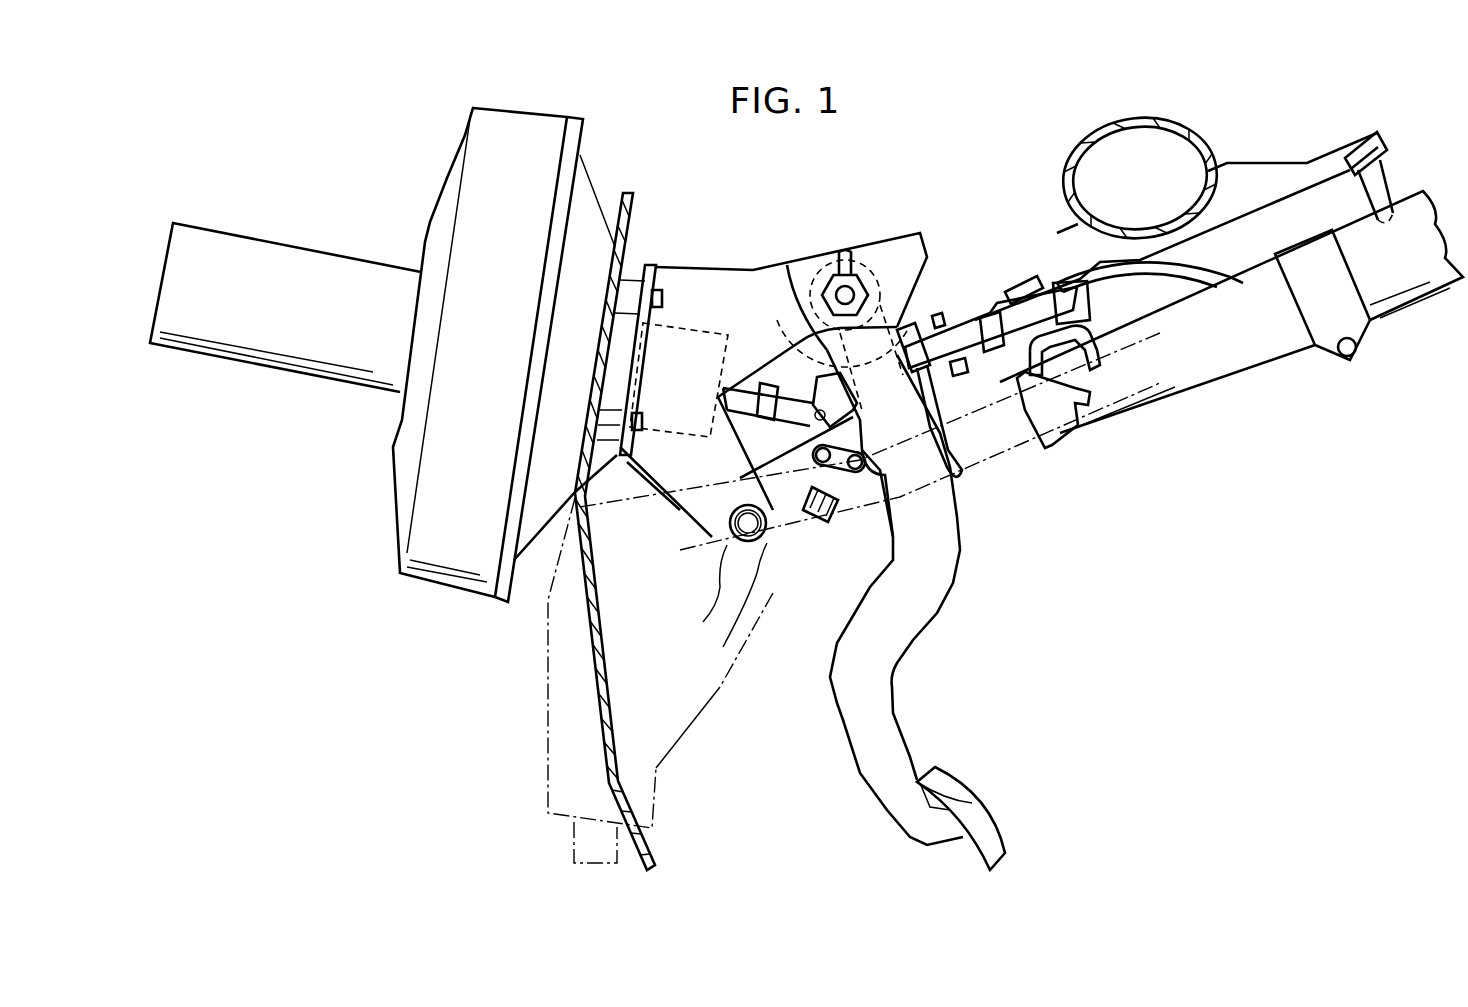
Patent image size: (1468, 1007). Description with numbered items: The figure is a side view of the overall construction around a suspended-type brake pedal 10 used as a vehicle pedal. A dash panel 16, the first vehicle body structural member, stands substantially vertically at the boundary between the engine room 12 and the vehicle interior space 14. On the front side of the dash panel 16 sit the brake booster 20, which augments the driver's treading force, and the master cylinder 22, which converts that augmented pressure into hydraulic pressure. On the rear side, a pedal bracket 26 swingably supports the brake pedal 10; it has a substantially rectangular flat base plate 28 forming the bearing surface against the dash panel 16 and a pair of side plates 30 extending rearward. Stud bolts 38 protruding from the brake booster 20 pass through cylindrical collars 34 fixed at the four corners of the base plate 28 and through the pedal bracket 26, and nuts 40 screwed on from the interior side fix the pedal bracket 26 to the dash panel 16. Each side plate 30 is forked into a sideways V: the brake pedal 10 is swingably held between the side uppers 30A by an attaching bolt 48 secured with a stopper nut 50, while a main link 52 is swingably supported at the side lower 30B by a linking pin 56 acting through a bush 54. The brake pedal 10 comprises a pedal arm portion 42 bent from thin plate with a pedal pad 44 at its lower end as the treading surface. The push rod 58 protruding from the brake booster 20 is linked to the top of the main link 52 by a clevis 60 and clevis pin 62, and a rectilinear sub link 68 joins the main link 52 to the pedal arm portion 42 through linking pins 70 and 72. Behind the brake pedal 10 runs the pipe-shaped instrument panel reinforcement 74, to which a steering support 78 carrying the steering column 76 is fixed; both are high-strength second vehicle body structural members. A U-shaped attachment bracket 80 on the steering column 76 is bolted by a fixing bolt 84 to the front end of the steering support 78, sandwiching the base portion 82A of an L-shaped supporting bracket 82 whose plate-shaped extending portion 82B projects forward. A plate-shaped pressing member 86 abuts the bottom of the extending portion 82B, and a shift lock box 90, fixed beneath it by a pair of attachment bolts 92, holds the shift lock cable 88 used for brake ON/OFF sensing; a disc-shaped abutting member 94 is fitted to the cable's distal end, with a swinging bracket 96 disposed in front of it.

The brake pedal 10 is at (898, 677).
The engine room 12 is at (431, 750).
The vehicle interior space 14 is at (1029, 752).
The dash panel 16 is at (603, 743).
The brake booster 20 is at (398, 535).
The master cylinder 22 is at (302, 373).
The pedal bracket 26 is at (692, 258).
The base plate 28 is at (648, 355).
The side plates 30 is at (799, 254).
The side uppers 30A is at (770, 267).
The side lower 30B is at (690, 496).
The cylindrical collars 34 is at (609, 462).
The stud bolts 38 is at (640, 428).
The nuts 40 is at (638, 415).
The pedal arm portion 42 is at (930, 603).
The pedal pad 44 is at (983, 793).
The attaching bolt 48 is at (840, 270).
The stopper nut 50 is at (853, 250).
The main link 52 is at (783, 543).
The bush 54 is at (732, 633).
The linking pin 56 is at (715, 610).
The push rod 58 is at (745, 393).
The clevis 60 is at (742, 430).
The clevis pin 62 is at (847, 413).
The sub link 68 is at (887, 537).
The linking pin 70 is at (817, 527).
The linking pin 72 is at (867, 462).
The instrument panel reinforcement 74 is at (1140, 118).
The steering column 76 is at (1237, 368).
The steering support 78 is at (1252, 163).
The attachment bracket 80 is at (1090, 347).
The supporting bracket 82 is at (995, 293).
The base portion 82A is at (1075, 310).
The extending portion 82B is at (997, 302).
The fixing bolt 84 is at (1028, 277).
The pressing member 86 is at (960, 467).
The shift lock cable 88 is at (1122, 260).
The shift lock box 90 is at (1028, 373).
The attachment bolts 92 is at (993, 467).
The abutting member 94 is at (793, 340).
The swinging bracket 96 is at (907, 320).